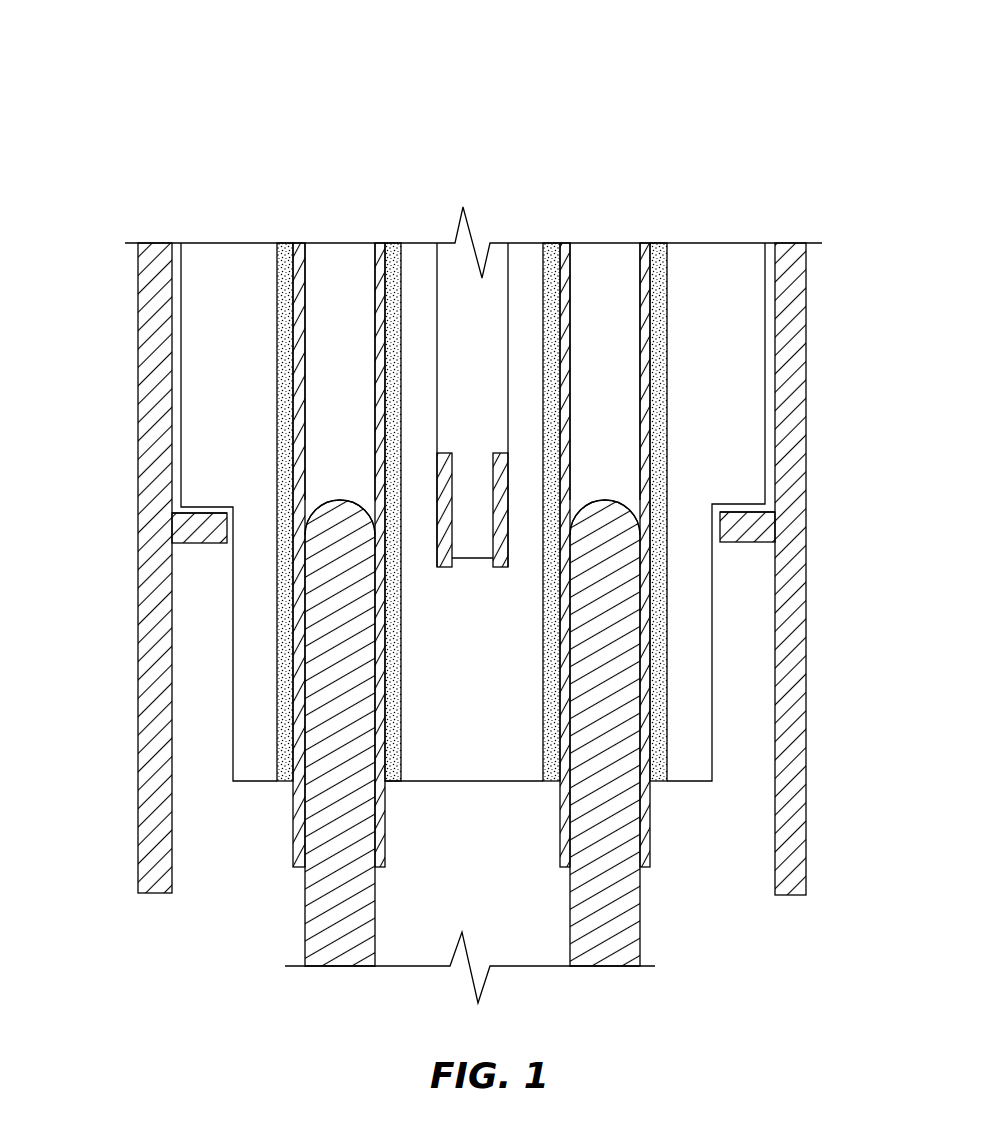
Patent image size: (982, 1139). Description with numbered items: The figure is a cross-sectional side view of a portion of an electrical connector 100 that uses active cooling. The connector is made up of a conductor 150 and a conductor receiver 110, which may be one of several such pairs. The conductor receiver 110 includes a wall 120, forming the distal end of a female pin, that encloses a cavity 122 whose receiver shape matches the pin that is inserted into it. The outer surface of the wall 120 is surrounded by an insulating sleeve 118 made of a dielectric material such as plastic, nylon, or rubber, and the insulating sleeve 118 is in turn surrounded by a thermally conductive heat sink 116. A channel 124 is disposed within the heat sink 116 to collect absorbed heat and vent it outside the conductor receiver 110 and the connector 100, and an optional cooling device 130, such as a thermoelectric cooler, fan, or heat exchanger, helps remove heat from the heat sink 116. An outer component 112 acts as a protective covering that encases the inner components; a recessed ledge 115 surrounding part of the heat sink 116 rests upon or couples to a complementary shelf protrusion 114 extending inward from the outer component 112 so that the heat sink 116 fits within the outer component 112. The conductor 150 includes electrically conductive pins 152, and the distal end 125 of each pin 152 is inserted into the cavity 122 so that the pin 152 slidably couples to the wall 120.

The electrical connector 100 is at (144, 48).
The conductor receiver 110 is at (664, 160).
The outer component 112 is at (155, 330).
The shelf protrusion 114 is at (200, 530).
The recessed ledge 115 is at (205, 522).
The heat sink 116 is at (260, 355).
The insulating sleeve 118 is at (285, 243).
The wall 120 is at (380, 243).
The cavity 122 is at (365, 355).
The channel 124 is at (496, 355).
The distal end 125 is at (337, 505).
The cooling device 130 is at (493, 472).
The conductor 150 is at (276, 958).
The pin 152 is at (365, 695).